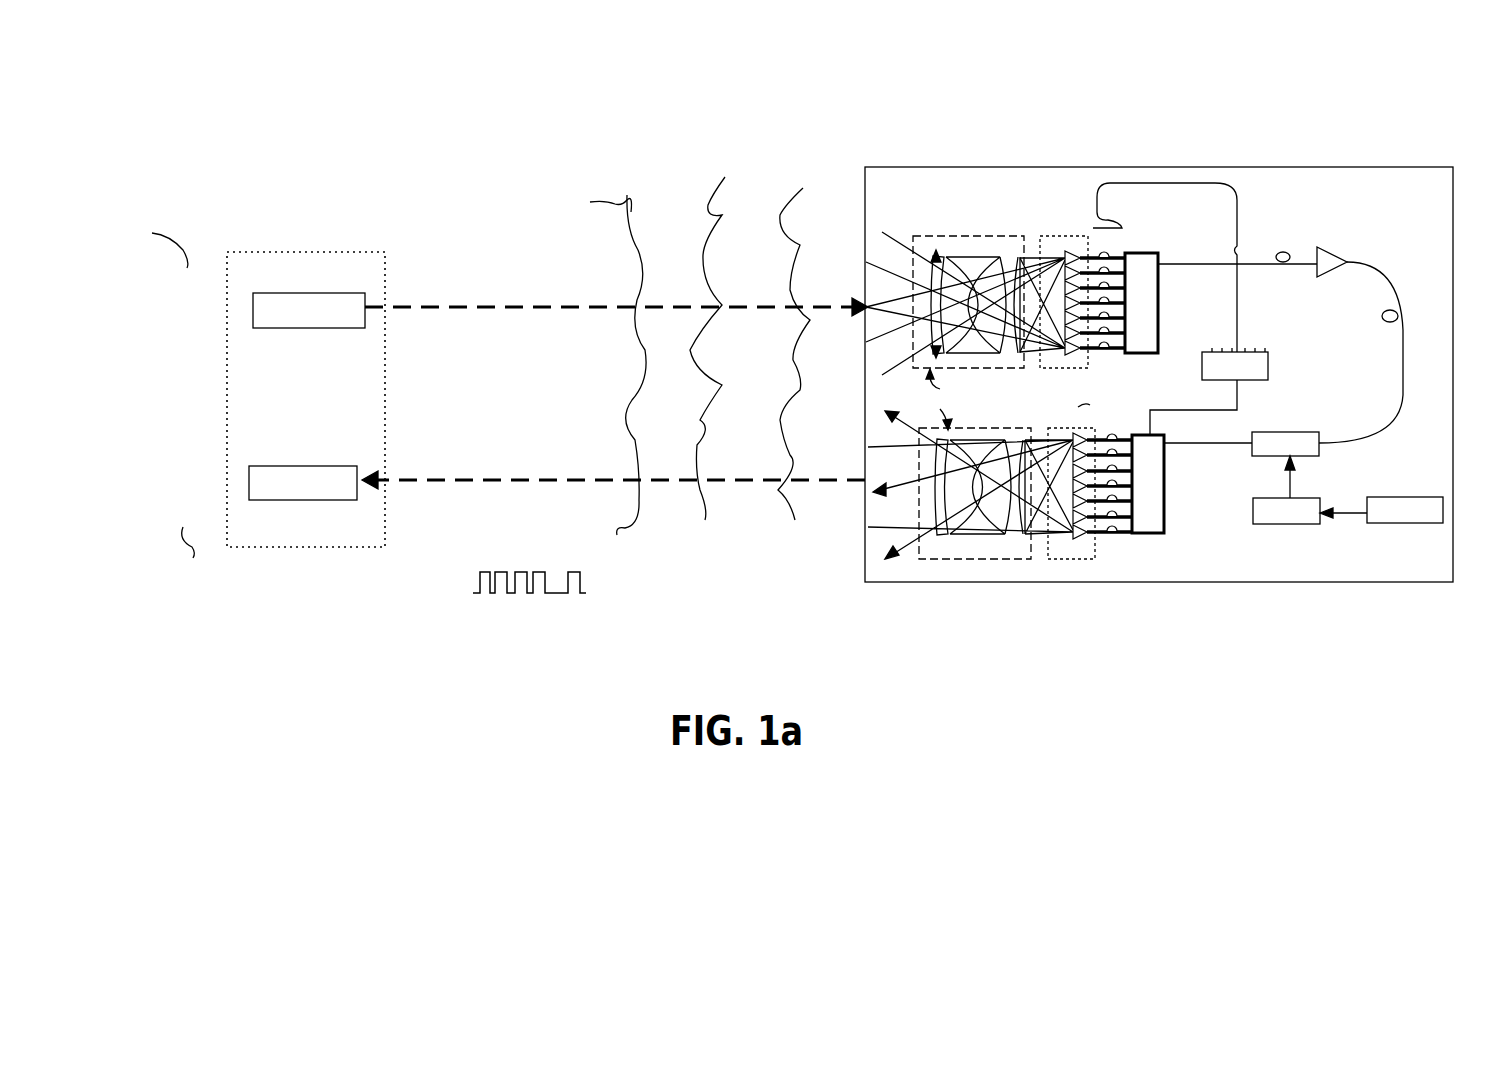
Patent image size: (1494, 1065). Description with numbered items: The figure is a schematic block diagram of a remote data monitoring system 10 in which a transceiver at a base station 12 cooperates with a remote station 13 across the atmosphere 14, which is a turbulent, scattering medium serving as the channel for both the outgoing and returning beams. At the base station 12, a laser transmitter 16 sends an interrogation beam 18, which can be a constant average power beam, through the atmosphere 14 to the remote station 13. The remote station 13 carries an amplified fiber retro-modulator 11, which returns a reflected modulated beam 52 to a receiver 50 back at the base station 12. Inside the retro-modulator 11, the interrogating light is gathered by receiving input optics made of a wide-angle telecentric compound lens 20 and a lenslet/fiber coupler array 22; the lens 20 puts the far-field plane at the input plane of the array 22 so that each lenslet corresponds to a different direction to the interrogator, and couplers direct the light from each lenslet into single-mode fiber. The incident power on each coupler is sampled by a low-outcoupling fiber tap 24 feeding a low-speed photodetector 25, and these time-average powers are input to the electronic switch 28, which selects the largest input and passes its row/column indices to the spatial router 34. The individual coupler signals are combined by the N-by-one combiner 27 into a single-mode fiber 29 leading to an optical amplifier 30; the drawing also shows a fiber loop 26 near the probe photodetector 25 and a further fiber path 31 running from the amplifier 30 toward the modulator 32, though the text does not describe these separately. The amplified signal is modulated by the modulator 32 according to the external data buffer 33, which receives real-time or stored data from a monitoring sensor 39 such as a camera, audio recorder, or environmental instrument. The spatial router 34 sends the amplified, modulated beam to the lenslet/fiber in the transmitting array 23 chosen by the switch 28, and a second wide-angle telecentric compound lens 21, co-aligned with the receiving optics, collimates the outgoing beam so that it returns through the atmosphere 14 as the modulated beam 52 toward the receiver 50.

The remote data monitoring system 10 is at (625, 92).
The amplified fiber retro-modulator 11 is at (990, 176).
The base station 12 is at (348, 545).
The remote station 13 is at (1118, 167).
The atmosphere 14 is at (592, 202).
The transmitter 16 is at (254, 314).
The interrogation beam 18 is at (442, 309).
The wide-angle telecentric compound lens 20 is at (948, 235).
The second wide-angle telecentric compound lens 21 is at (975, 559).
The lenslet/fiber coupler array 22 is at (1055, 235).
The transmitting array 23 is at (1086, 369).
The fiber tap 24 is at (1108, 254).
The photodetector 25 is at (1120, 216).
The fiber loop 26 is at (1237, 195).
The N×1 combiner 27 is at (1158, 270).
The electronic switch 28 is at (1258, 350).
The single-mode fiber 29 is at (1270, 260).
The optical amplifier 30 is at (1318, 272).
The fiber loop to modulator 31 is at (1402, 385).
The modulator 32 is at (1264, 431).
The data buffer 33 is at (1253, 510).
The spatial router 34 is at (1164, 470).
The monitoring sensor 39 is at (1380, 497).
The receiver 50 is at (251, 485).
The reflected modulated beam 52 is at (563, 482).